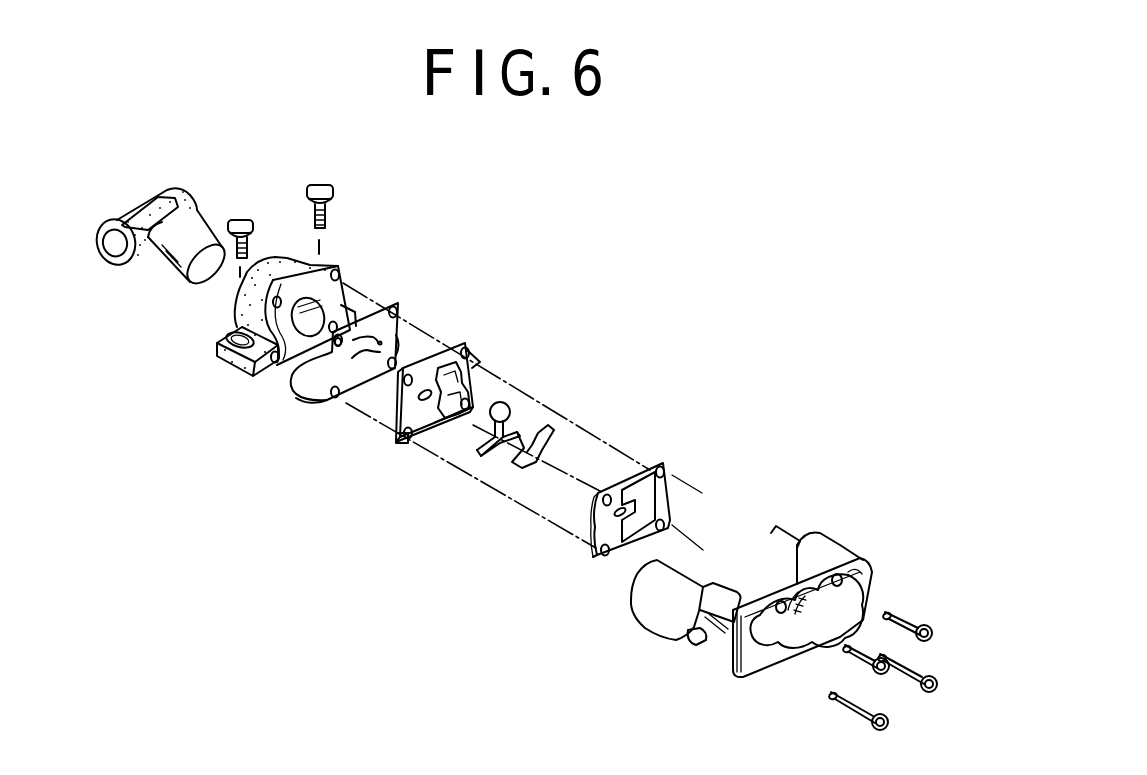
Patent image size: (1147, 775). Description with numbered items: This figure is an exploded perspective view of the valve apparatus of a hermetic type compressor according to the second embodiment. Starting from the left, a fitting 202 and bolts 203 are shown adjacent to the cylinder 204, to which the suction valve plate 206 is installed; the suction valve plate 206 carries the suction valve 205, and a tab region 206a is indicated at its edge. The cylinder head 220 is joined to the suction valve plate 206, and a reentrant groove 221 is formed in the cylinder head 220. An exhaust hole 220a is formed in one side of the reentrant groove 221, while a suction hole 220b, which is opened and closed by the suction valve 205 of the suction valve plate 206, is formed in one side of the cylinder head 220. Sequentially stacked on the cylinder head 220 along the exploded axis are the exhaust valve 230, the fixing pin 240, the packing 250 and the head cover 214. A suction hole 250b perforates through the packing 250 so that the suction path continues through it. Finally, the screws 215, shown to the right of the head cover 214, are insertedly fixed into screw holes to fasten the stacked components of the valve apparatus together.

The fuel inlet fitting 202 is at (175, 266).
The bolt 203 is at (333, 186).
The cylinder 204 is at (318, 262).
The suction valve 205 is at (312, 372).
The suction valve plate 206 is at (399, 303).
The gasket tab 206a is at (350, 405).
The cylinder head 220 is at (467, 343).
The exhaust hole 220a is at (480, 362).
The suction hole 220b is at (388, 421).
The reentrant groove 221 is at (452, 362).
The exhaust valve 230 is at (509, 405).
The fixing pin 240 is at (547, 428).
The packing 250 is at (665, 462).
The suction hole 250b is at (592, 541).
The head cover 214 is at (860, 558).
The screws 215 is at (920, 667).